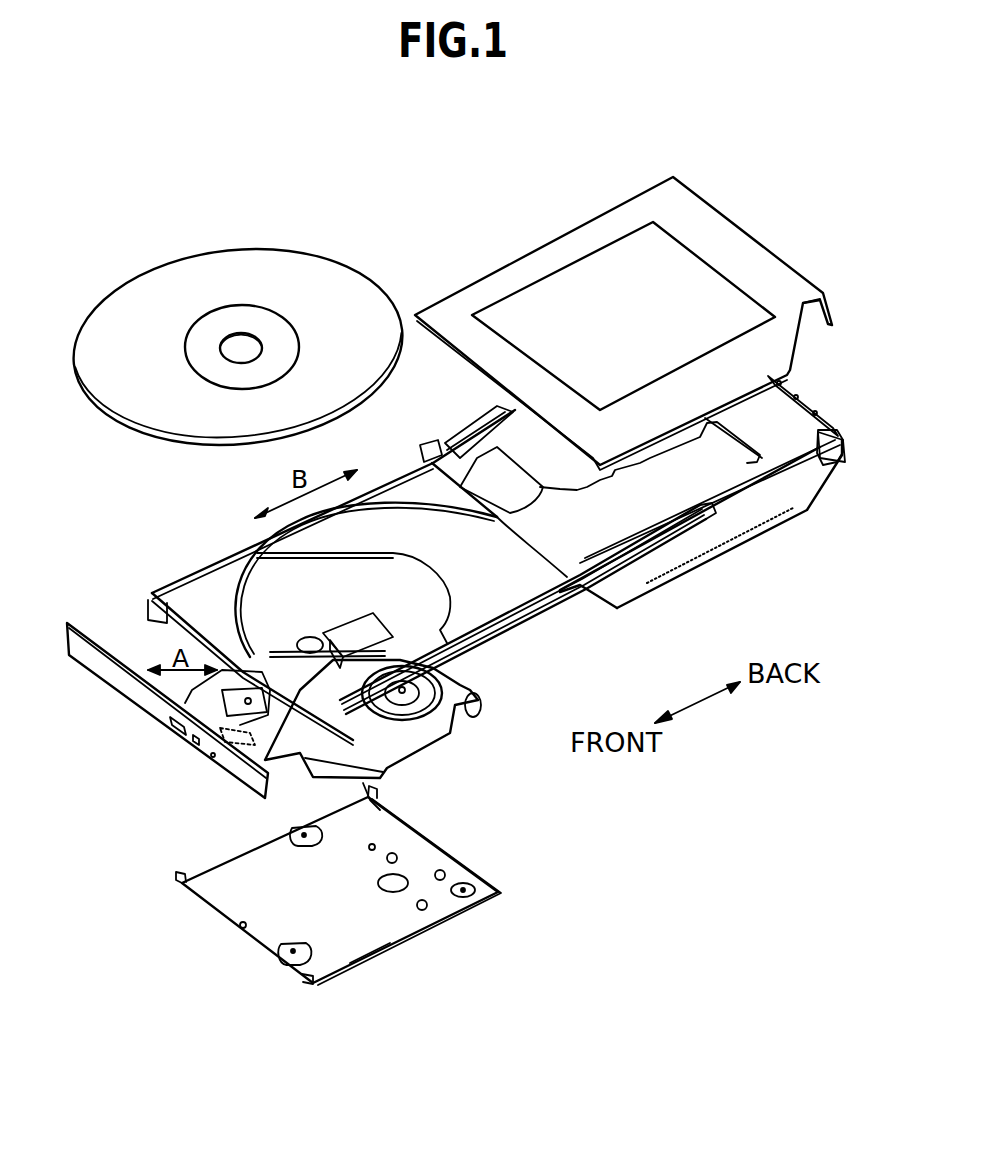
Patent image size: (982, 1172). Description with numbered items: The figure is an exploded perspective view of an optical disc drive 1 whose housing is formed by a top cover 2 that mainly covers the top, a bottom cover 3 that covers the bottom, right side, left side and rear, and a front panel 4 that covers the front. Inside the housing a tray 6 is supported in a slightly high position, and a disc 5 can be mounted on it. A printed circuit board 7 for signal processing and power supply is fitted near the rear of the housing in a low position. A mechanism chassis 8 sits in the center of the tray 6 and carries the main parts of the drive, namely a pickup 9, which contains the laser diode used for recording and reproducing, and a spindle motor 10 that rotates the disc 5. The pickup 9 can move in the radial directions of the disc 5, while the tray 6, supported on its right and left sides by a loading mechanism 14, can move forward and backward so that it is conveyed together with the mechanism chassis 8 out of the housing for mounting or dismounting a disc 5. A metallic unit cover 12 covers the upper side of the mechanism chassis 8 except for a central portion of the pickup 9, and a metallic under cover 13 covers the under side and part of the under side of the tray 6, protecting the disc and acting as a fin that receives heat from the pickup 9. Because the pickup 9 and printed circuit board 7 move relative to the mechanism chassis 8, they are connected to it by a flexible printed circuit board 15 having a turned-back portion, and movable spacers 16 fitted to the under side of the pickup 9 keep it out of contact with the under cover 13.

The optical disc drive 1 is at (406, 208).
The top cover 2 is at (553, 256).
The bottom cover 3 is at (727, 522).
The front panel 4 is at (132, 687).
The disc 5 is at (171, 289).
The tray 6 is at (420, 475).
The printed circuit board 7 is at (777, 427).
The mechanism chassis 8 is at (380, 783).
The pickup 9 is at (227, 613).
The spindle motor 10 is at (417, 703).
The unit cover 12 is at (420, 733).
The under cover 13 is at (410, 923).
The loading mechanism 14 is at (520, 620).
The flexible printed circuit board 15 is at (630, 505).
The movable spacers 16 is at (263, 723).